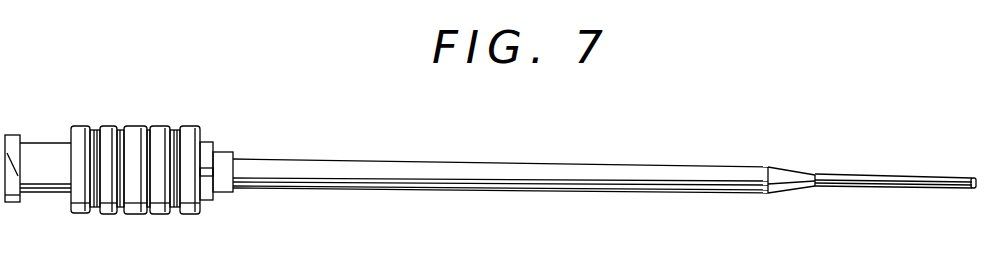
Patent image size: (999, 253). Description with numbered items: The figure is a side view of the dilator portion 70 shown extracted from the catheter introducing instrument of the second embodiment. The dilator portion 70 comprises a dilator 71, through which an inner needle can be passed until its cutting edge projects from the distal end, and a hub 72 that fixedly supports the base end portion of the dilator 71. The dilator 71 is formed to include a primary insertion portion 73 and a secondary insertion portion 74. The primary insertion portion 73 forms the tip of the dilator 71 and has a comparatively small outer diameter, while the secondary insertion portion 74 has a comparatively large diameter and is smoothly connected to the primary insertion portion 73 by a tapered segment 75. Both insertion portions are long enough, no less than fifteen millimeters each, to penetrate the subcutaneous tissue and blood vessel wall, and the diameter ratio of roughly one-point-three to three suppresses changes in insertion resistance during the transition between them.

The dilator portion 70 is at (363, 155).
The dilator 71 is at (626, 173).
The hub 72 is at (133, 131).
The primary insertion portion 73 is at (975, 200).
The secondary insertion portion 74 is at (245, 199).
The tapered segment 75 is at (813, 200).